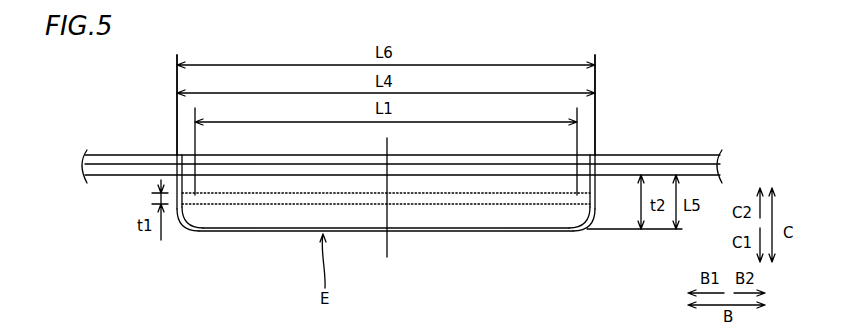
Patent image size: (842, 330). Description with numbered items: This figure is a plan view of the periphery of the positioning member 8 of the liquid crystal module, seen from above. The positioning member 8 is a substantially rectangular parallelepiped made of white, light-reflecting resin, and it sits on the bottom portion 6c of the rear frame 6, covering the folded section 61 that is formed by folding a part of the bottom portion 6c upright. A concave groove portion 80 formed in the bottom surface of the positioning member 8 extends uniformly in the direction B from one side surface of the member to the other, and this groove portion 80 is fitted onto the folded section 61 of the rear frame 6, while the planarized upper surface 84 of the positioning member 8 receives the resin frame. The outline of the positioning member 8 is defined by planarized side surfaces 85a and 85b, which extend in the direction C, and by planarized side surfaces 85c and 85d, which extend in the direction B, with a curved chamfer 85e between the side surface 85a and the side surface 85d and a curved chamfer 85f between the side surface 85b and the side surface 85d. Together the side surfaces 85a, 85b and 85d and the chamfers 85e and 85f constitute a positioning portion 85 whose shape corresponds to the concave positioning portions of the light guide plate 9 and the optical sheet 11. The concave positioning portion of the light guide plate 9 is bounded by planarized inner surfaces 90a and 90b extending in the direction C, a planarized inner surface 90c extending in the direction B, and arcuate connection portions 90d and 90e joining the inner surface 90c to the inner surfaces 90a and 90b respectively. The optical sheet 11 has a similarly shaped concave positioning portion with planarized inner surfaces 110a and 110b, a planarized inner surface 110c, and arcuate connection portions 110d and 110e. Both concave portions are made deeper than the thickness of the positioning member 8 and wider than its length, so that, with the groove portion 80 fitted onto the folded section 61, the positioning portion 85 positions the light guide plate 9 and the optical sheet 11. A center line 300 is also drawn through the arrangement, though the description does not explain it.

The rear frame 6 is at (103, 161).
The bottom portion 6c is at (132, 171).
The light guide plate 9 is at (698, 149).
The optical sheet 11 is at (698, 180).
The positioning portion 85 is at (415, 202).
The side surface 85a is at (175, 182).
The side surface 85b is at (598, 186).
The side surface 85c is at (415, 175).
The side surface 85d is at (504, 233).
The chamfer 85e is at (190, 228).
The chamfer 85f is at (586, 228).
The inner surface 90a is at (245, 167).
The inner surface 90b is at (534, 177).
The inner surface 90c is at (386, 266).
The connection portion 90d is at (155, 248).
The connection portion 90e is at (656, 148).
The inner surface 110a is at (190, 199).
The inner surface 110b is at (582, 194).
The inner surface 110c is at (452, 231).
The connection portion 110d is at (186, 222).
The connection portion 110e is at (594, 197).
The upper surface 84 is at (386, 241).
The positioning member 8 is at (248, 197).
The folded section 61 is at (305, 198).
The groove portion 80 is at (398, 196).
The center line 300 is at (379, 251).